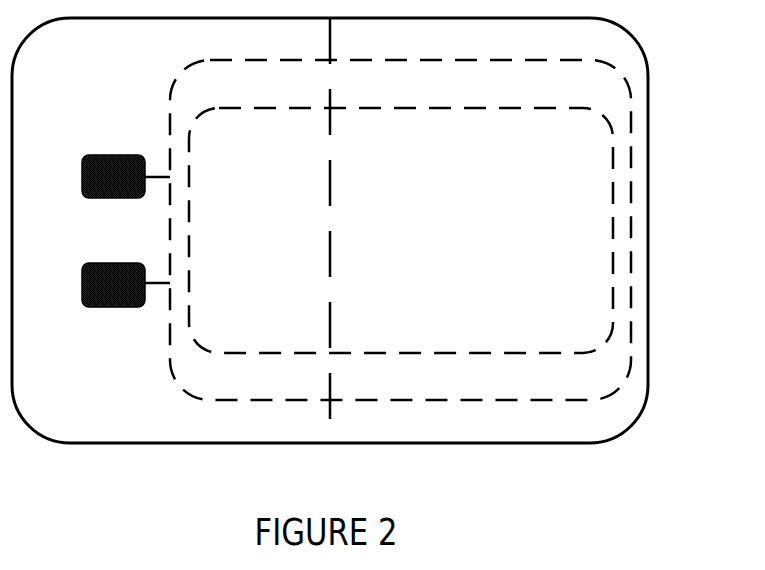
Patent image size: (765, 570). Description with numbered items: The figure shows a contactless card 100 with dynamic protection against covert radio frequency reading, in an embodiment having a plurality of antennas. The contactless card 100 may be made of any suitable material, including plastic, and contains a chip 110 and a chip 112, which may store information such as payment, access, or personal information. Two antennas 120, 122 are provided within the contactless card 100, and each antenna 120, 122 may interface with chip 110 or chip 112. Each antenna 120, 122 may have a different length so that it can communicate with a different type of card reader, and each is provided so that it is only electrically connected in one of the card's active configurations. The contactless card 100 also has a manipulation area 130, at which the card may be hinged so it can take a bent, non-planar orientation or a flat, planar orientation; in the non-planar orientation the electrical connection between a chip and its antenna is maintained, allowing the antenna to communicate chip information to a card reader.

The contactless card 100 is at (647, 407).
The chip 110 is at (112, 200).
The chip 112 is at (84, 306).
The antenna 120 is at (175, 84).
The antenna 122 is at (189, 372).
The manipulation area 130 is at (317, 413).